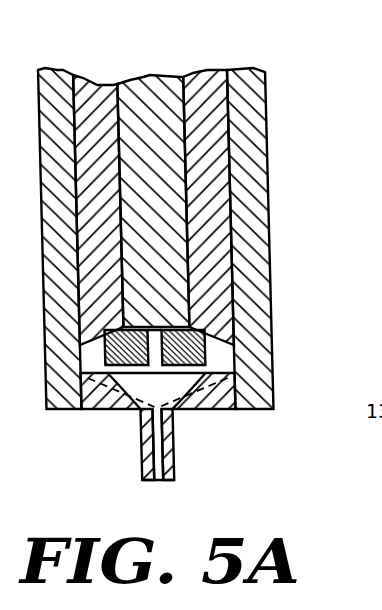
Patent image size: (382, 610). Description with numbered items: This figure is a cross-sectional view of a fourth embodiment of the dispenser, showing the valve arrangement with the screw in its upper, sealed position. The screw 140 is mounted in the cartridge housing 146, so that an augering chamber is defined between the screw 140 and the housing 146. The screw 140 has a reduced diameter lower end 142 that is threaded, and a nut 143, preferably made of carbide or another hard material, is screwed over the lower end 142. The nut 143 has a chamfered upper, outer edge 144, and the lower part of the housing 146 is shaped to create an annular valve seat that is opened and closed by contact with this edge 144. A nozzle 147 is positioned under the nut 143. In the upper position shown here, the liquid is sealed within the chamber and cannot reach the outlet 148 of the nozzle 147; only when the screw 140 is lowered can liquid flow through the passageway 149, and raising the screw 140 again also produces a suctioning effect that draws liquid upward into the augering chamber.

The screw 140 is at (150, 73).
The cartridge housing 146 is at (217, 73).
The nozzle 147 is at (210, 410).
The outlet 148 is at (157, 482).
The passageway 149 is at (180, 384).
The reduced diameter lower end 142 is at (205, 332).
The nut 143 is at (206, 336).
The chamfered upper, outer edge 144 is at (200, 330).